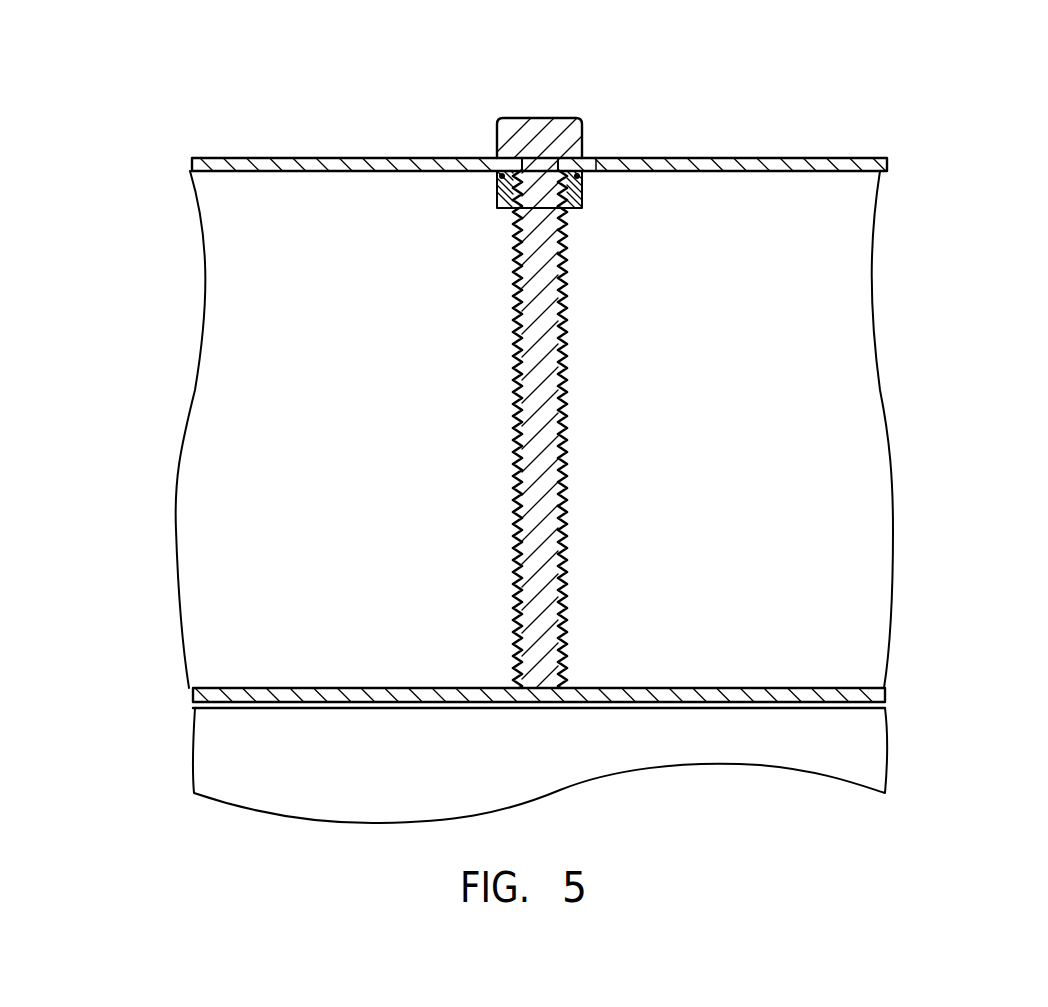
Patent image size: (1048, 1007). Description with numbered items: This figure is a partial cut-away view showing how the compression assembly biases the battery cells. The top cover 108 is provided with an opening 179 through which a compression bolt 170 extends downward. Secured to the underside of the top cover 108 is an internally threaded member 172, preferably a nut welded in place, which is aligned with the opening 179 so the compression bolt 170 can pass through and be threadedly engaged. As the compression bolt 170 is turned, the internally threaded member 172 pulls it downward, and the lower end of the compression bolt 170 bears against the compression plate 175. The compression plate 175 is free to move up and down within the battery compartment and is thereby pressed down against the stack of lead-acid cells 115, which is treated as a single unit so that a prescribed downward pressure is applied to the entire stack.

The top cover 108 is at (712, 157).
The compression bolt 170 is at (545, 118).
The internally threaded member 172 is at (587, 186).
The opening 179 is at (590, 158).
The compression plate 175 is at (742, 688).
The stack of lead-acid cells 115 is at (890, 757).